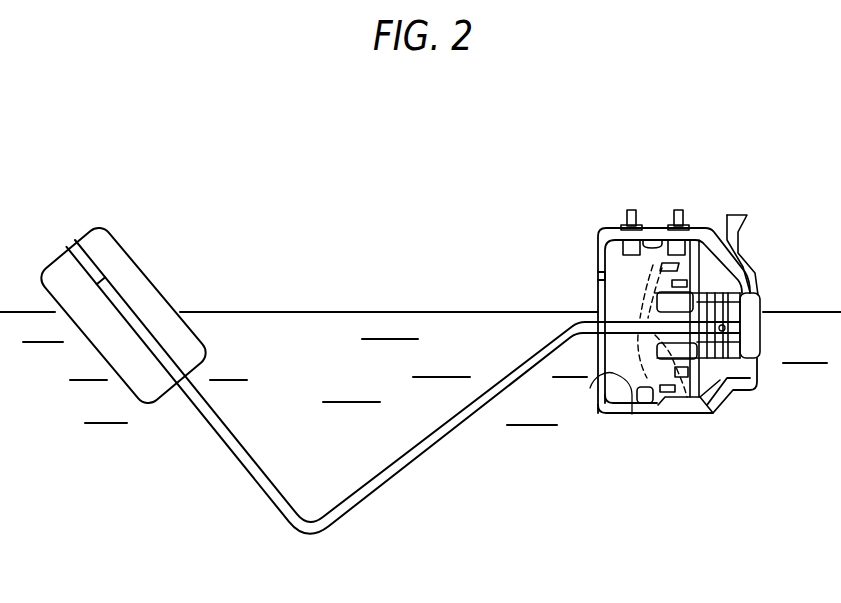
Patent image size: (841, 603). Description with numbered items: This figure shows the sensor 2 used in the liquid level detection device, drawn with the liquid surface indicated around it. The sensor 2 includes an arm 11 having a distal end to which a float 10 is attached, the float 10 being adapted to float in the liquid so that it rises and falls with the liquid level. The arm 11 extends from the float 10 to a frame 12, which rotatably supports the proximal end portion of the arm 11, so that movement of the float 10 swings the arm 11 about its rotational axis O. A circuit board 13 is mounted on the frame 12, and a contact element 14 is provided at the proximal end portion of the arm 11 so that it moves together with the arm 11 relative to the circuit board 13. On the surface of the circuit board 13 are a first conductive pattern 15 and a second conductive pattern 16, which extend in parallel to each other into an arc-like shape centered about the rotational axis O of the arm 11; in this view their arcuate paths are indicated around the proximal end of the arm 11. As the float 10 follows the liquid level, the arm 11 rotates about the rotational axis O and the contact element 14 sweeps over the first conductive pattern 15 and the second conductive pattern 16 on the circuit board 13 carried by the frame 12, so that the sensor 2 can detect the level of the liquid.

The sensor 2 is at (578, 188).
The float 10 is at (127, 264).
The arm 11 is at (231, 434).
The frame 12 is at (682, 407).
The circuit board 13 is at (595, 384).
The contact element 14 is at (650, 314).
The first conductive pattern 15 is at (630, 416).
The second conductive pattern 16 is at (715, 413).
The rotational axis O is at (723, 331).